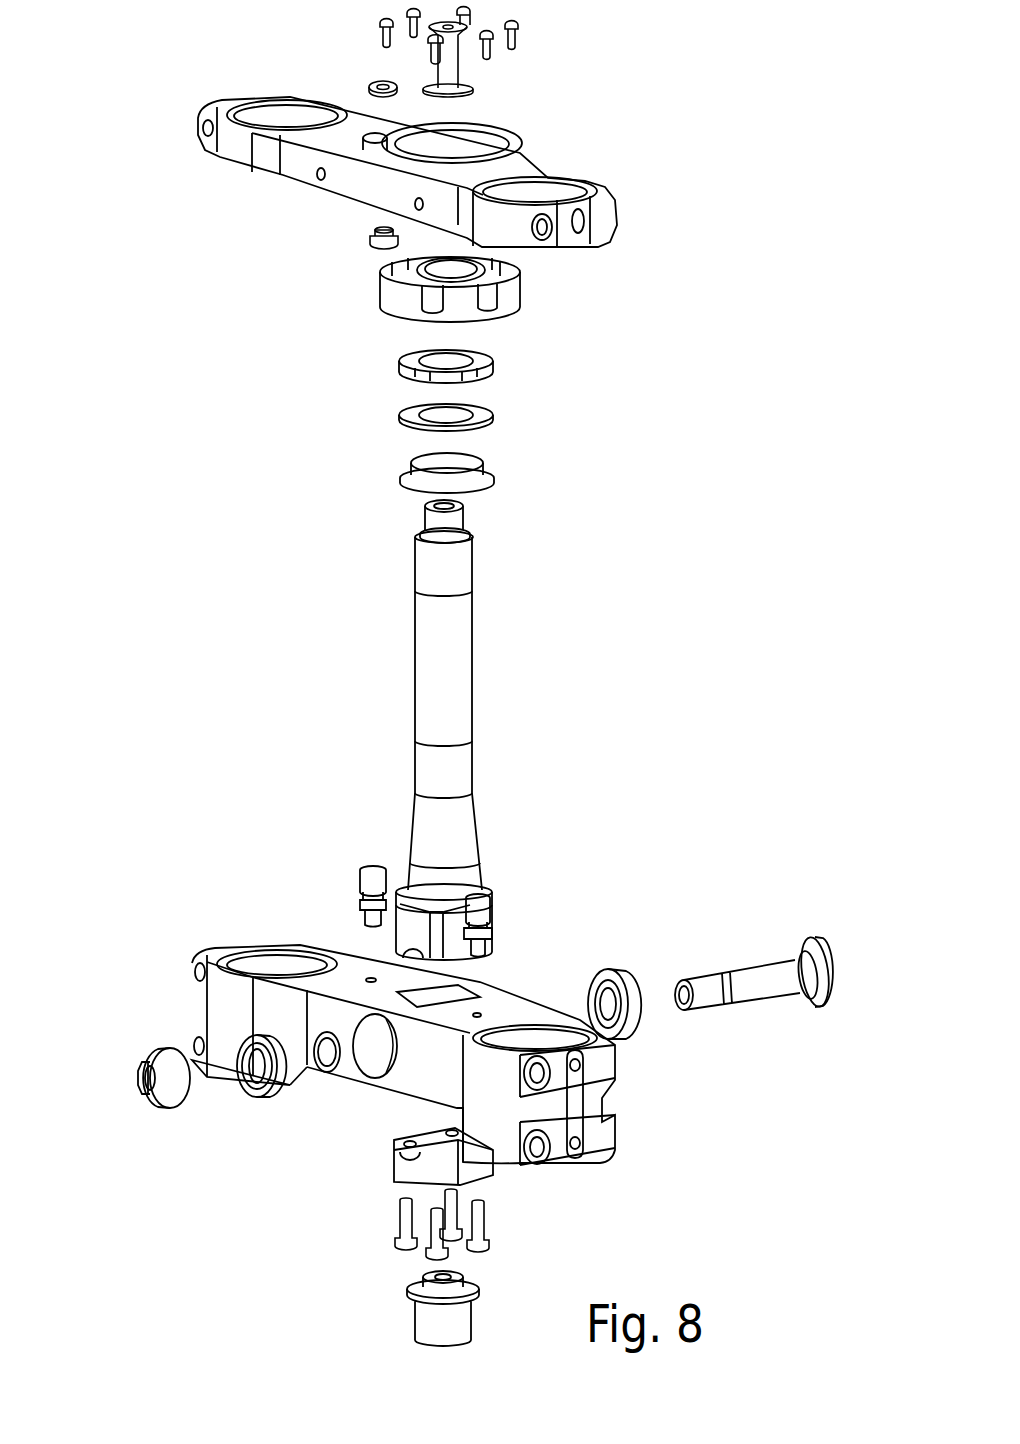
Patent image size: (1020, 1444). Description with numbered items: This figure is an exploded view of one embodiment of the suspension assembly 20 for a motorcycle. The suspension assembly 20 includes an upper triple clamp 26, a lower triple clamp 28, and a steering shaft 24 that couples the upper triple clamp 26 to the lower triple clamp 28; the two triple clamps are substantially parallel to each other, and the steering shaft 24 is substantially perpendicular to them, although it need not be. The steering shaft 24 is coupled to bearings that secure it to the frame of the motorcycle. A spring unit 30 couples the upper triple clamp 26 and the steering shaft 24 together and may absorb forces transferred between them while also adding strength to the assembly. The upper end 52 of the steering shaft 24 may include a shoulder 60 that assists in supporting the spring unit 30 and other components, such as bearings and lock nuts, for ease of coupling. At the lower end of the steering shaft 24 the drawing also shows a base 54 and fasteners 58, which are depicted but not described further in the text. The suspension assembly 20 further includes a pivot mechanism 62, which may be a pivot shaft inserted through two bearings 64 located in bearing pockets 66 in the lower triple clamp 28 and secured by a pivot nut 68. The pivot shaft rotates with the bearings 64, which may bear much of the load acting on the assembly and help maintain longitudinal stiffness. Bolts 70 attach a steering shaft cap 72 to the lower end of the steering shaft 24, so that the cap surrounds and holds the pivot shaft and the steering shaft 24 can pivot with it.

The suspension assembly 20 is at (722, 166).
The steering shaft 24 is at (466, 670).
The upper triple clamp 26 is at (537, 166).
The lower triple clamp 28 is at (528, 1005).
The spring unit 30 is at (515, 300).
The upper end 52 is at (462, 517).
The stem base 54 is at (402, 943).
The fasteners 58 is at (365, 881).
The shoulder 60 is at (425, 535).
The pivot mechanism 62 is at (749, 972).
The bearings 64 is at (290, 1092).
The bearing pockets 66 is at (378, 1058).
The pivot nut 68 is at (175, 1102).
The bolts 70 is at (520, 1223).
The steering shaft cap 72 is at (410, 1163).